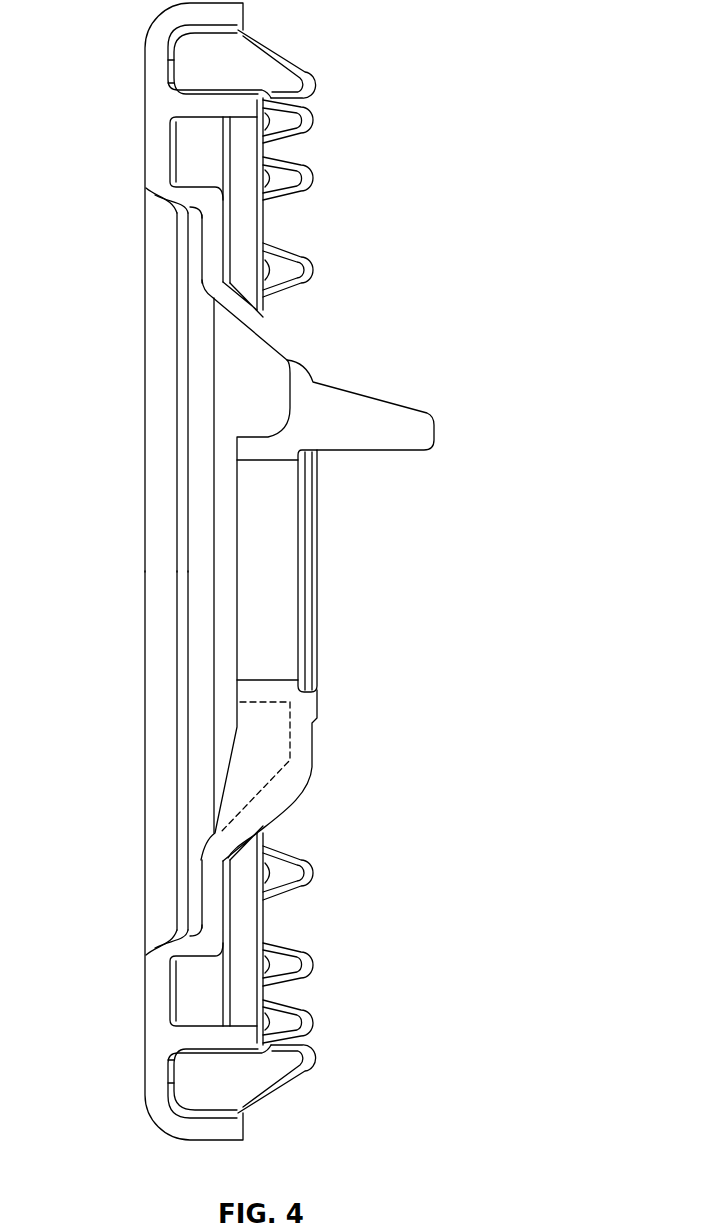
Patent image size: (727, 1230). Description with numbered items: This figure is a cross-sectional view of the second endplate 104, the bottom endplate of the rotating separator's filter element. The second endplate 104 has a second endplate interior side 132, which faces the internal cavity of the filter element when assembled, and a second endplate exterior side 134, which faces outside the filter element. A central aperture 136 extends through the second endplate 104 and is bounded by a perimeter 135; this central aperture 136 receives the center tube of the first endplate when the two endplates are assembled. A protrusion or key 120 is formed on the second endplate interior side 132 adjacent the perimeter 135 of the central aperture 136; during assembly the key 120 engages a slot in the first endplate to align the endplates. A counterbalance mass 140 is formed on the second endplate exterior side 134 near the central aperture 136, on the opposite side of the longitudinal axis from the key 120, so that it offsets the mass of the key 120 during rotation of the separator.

The second endplate 104 is at (310, 571).
The key 120 is at (410, 420).
The second endplate interior side 132 is at (355, 1035).
The second endplate exterior side 134 is at (97, 933).
The perimeter 135 is at (315, 690).
The central aperture 136 is at (275, 680).
The counterbalance mass 140 is at (260, 755).